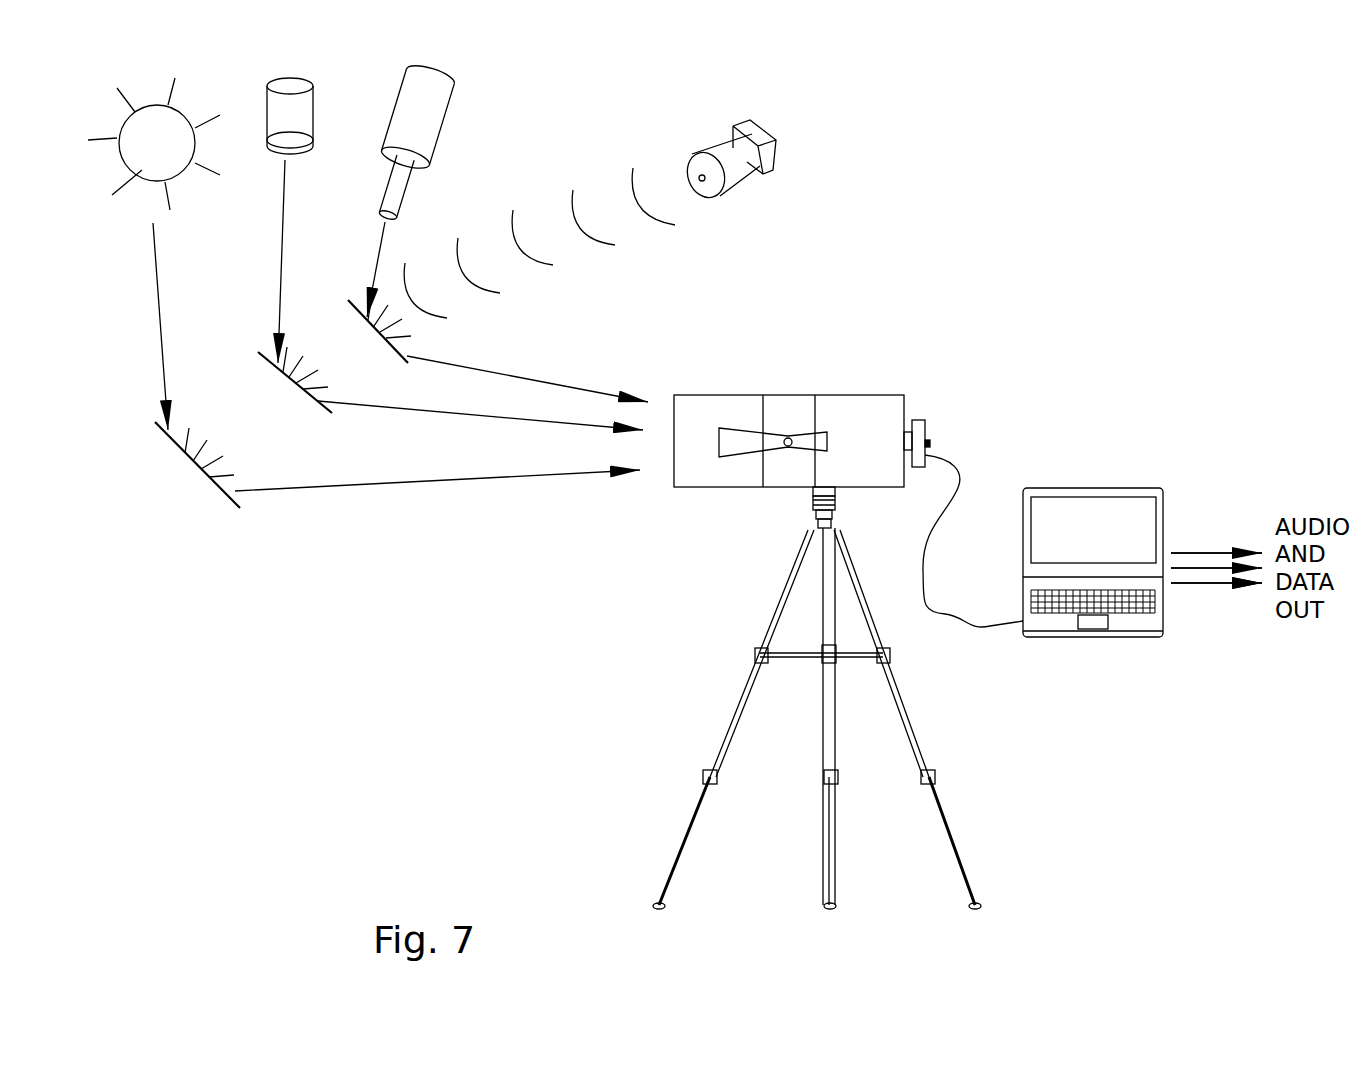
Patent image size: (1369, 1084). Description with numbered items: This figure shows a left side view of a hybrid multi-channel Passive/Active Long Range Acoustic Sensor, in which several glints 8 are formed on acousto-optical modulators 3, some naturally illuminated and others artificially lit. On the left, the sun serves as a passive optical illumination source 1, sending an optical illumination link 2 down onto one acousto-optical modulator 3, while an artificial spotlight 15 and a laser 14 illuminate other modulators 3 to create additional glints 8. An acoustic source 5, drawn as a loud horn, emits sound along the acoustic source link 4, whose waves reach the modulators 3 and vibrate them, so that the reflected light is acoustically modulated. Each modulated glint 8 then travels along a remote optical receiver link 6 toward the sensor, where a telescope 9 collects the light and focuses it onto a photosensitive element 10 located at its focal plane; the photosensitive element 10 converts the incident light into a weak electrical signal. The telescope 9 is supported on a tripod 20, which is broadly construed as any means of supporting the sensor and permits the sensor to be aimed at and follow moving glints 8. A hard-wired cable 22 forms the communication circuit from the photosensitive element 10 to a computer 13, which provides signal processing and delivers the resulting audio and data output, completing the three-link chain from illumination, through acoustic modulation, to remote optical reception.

The optical illumination source 1 is at (143, 148).
The optical illumination link 2 is at (145, 350).
The acousto-optical modulator 3 is at (168, 465).
The acoustic source link 4 is at (647, 248).
The acoustic source 5 is at (760, 138).
The remote optical receiver link 6 is at (462, 497).
The glint 8 is at (432, 335).
The telescope 9 is at (860, 422).
The photosensitive element 10 is at (912, 413).
The computer 13 is at (1048, 522).
The laser 14 is at (413, 130).
The spotlight 15 is at (292, 103).
The tripod 20 is at (715, 702).
The cable 22 is at (978, 640).